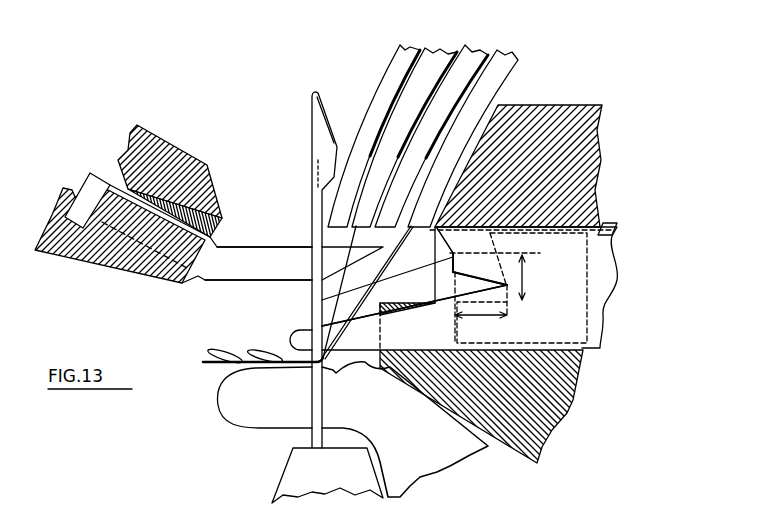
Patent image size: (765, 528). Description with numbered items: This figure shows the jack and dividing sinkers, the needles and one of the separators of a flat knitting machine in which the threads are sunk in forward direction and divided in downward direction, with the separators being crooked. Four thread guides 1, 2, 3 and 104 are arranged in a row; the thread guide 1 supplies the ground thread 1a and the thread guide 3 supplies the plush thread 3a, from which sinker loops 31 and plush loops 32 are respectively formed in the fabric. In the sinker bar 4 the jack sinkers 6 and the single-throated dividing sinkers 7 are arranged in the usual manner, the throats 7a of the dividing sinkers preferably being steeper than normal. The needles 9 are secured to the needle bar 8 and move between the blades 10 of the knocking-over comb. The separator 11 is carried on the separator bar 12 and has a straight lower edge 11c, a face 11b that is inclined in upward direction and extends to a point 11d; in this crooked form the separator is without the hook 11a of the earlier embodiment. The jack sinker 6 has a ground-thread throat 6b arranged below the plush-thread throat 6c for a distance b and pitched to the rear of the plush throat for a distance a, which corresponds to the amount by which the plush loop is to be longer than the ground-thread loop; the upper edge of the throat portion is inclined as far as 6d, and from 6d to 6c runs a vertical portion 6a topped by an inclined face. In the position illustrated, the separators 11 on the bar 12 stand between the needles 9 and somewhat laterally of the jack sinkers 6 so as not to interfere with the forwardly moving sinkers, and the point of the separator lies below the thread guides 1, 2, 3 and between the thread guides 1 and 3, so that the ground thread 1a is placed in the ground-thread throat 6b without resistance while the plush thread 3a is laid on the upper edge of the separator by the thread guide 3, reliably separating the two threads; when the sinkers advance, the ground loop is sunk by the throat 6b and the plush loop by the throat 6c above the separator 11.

The thread guide 1 is at (506, 57).
The thread guide 2 is at (478, 53).
The thread guide 3 is at (442, 51).
The thread guide 104 is at (413, 47).
The sinker bar 4 is at (543, 110).
The jack sinker 6 is at (603, 303).
The vertical portion 6a is at (453, 262).
The ground-thread throat 6b is at (512, 287).
The plush-thread throat 6c is at (453, 255).
The point of the throat portion 6d is at (456, 278).
The dividing sinker 7 is at (612, 232).
The throat 7a is at (503, 264).
The needle bar 8 is at (290, 482).
The needle 9 is at (312, 152).
The blade of the knocking-over comb 10 is at (263, 418).
The separator 11 is at (255, 267).
The hook 11a is at (250, 247).
The inclined face 11b is at (347, 258).
The lower edge 11c is at (238, 281).
The point 11d is at (381, 248).
The separator bar 12 is at (110, 252).
The sinker loop 31 is at (220, 367).
The plush loop 32 is at (221, 354).
The ground thread 1a is at (338, 307).
The plush thread 3a is at (338, 288).
The distance a is at (481, 308).
The distance b is at (516, 277).